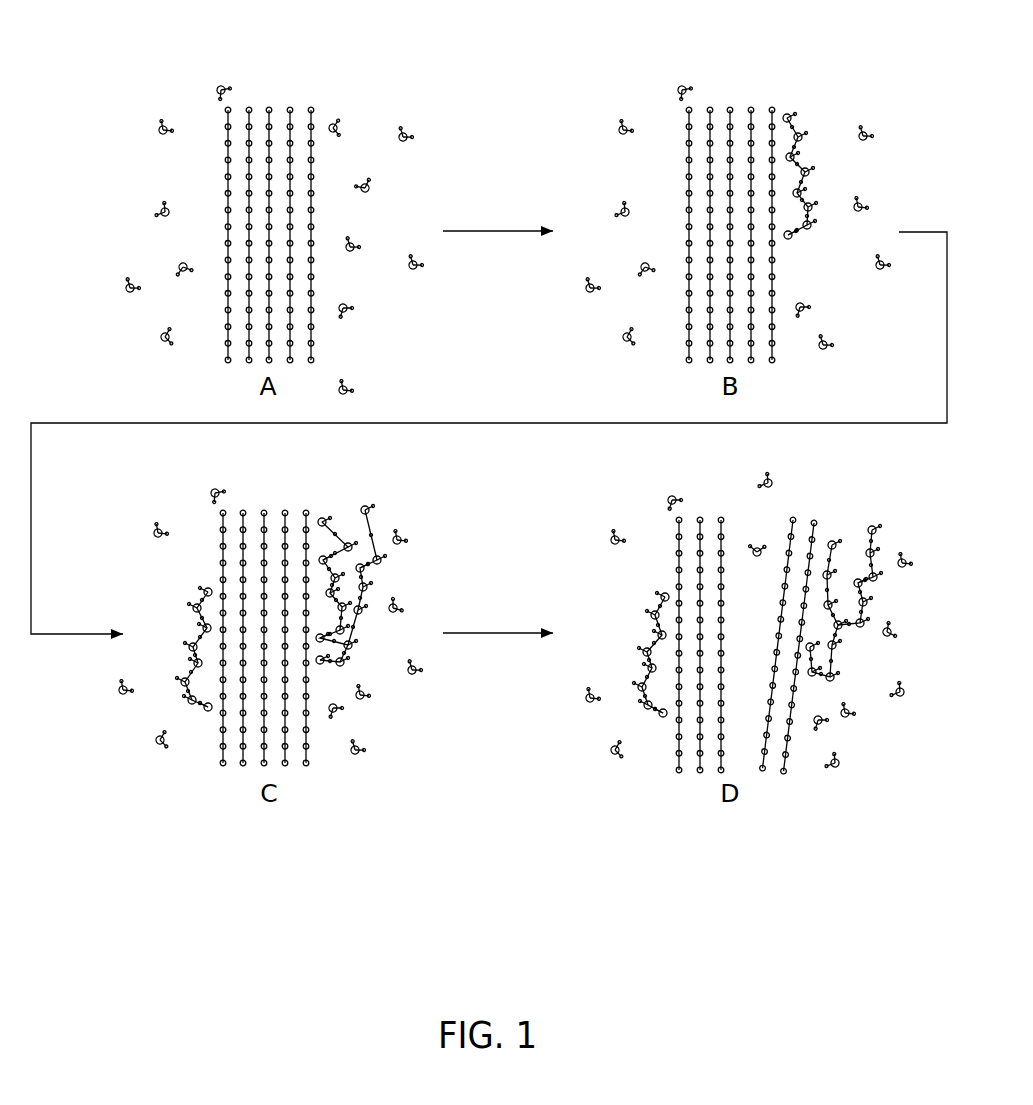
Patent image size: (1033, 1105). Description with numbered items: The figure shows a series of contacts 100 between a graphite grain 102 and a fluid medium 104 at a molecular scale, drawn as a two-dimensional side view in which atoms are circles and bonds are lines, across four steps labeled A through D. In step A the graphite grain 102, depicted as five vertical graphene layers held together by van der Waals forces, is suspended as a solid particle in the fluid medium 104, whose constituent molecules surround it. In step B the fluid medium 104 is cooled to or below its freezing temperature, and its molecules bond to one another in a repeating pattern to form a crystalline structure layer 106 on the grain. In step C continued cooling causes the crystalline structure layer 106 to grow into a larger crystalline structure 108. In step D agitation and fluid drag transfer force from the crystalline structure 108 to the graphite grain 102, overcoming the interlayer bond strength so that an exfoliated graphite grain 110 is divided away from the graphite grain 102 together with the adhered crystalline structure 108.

The series of contacts 100 is at (567, 63).
The graphite grain 102 is at (311, 100).
The fluid medium 104 is at (406, 128).
The crystalline structure layer 106 is at (796, 100).
The crystalline structure 108 is at (331, 506).
The exfoliated graphite grain 110 is at (796, 510).